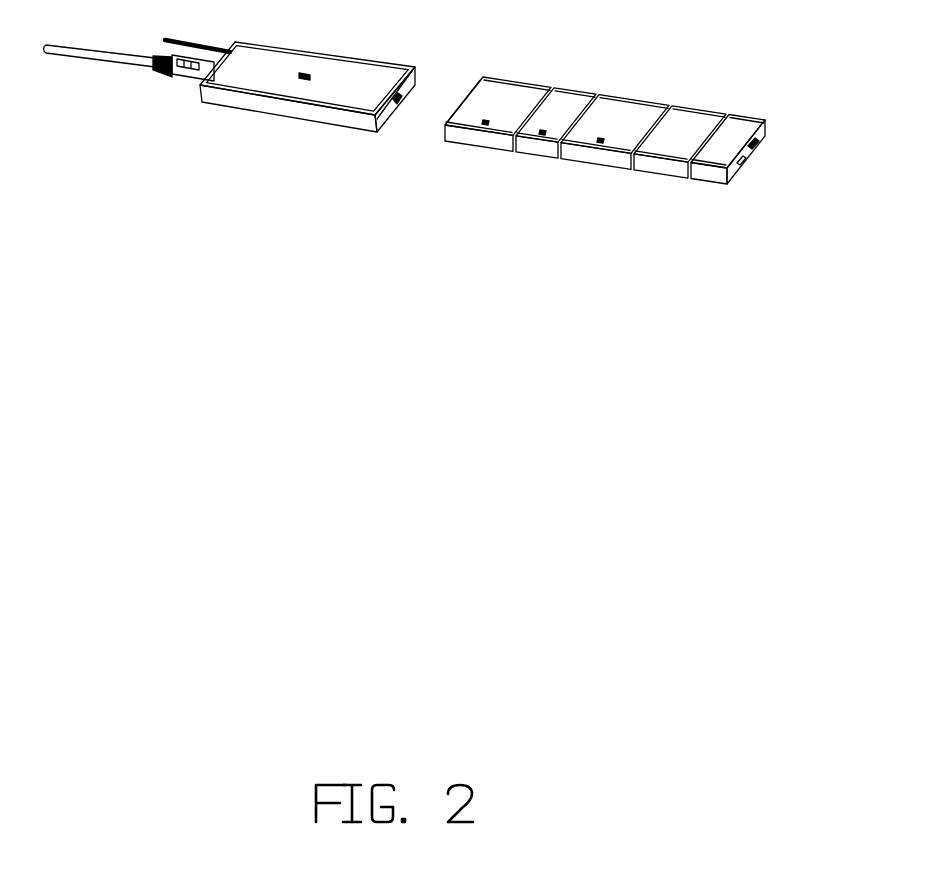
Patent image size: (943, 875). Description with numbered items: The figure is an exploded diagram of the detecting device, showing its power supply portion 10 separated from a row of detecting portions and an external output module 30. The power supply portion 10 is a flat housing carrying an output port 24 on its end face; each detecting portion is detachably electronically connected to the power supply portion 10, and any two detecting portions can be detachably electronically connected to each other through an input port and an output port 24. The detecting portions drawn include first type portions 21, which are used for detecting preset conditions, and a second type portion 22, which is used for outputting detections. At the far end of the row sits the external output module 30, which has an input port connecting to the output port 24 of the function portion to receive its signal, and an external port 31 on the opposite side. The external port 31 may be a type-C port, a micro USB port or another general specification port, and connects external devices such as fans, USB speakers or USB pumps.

The power supply portion 10 is at (352, 72).
The first type portion 21 is at (510, 93).
The second type portion 22 is at (676, 150).
The output port 24 is at (395, 110).
The external output module 30 is at (745, 125).
The external port 31 is at (758, 147).